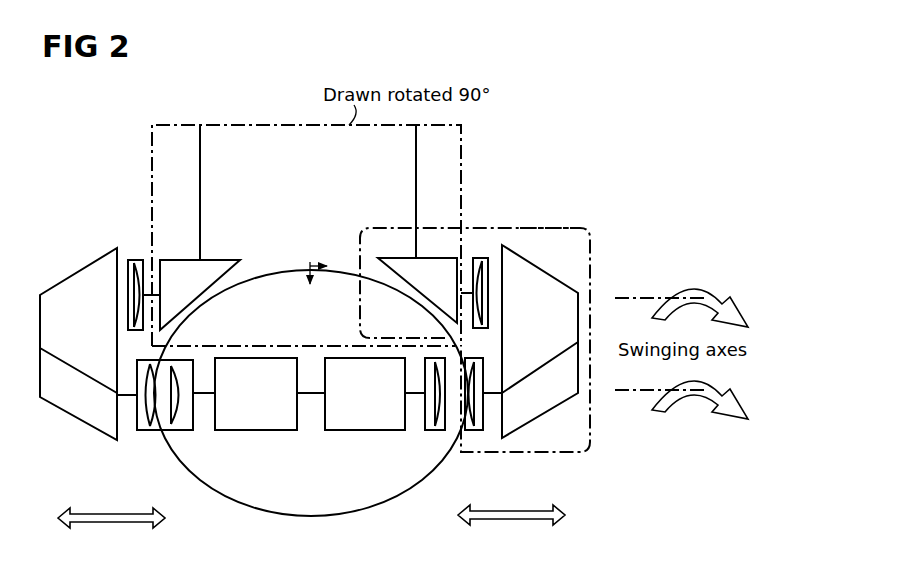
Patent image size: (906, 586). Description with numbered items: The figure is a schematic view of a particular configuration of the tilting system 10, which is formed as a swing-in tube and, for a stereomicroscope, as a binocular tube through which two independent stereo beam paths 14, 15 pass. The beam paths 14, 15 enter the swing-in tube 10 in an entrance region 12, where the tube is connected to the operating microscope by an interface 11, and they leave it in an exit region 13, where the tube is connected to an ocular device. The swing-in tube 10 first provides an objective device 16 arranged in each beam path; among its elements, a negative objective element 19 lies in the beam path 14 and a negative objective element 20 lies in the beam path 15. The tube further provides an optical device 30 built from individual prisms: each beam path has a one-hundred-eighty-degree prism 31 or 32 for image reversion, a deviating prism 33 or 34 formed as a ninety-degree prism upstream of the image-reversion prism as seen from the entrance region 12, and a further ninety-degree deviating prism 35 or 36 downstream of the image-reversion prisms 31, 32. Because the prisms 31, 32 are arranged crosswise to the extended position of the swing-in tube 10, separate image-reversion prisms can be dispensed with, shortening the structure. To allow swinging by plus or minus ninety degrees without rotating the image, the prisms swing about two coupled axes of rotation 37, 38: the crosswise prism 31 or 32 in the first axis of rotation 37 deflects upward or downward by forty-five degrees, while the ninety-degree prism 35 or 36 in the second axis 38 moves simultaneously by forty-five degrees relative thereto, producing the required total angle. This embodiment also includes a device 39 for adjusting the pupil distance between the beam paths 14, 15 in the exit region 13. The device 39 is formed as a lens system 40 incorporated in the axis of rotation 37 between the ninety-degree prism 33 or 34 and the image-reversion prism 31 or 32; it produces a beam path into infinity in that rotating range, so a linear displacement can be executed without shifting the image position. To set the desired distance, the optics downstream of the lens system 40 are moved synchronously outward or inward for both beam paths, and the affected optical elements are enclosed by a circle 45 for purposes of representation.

The tilting system 10 is at (128, 151).
The interface 11 is at (310, 517).
The entrance region 12 is at (331, 452).
The exit region 13 is at (280, 112).
The beam path 14 is at (200, 172).
The beam path 15 is at (416, 146).
The objective device 16 is at (124, 249).
The negative objective element 19 is at (138, 258).
The negative objective element 20 is at (481, 258).
The optical device 30 is at (603, 237).
The 180° prism 31 is at (92, 270).
The 180° prism 32 is at (588, 320).
The deviating prism 33 is at (270, 429).
The deviating prism 34 is at (382, 427).
The deviating prism 35 is at (210, 262).
The deviating prism 36 is at (399, 259).
The axis of rotation 37 is at (622, 392).
The axis of rotation 38 is at (632, 298).
The device 39 is at (137, 376).
The lens system 40 is at (146, 433).
The circle 45 is at (555, 228).